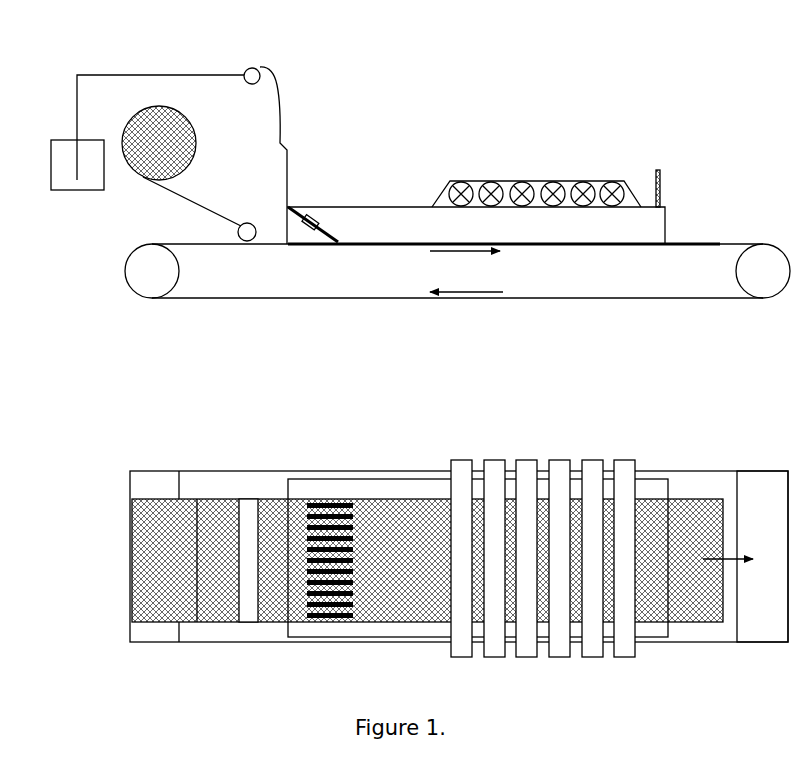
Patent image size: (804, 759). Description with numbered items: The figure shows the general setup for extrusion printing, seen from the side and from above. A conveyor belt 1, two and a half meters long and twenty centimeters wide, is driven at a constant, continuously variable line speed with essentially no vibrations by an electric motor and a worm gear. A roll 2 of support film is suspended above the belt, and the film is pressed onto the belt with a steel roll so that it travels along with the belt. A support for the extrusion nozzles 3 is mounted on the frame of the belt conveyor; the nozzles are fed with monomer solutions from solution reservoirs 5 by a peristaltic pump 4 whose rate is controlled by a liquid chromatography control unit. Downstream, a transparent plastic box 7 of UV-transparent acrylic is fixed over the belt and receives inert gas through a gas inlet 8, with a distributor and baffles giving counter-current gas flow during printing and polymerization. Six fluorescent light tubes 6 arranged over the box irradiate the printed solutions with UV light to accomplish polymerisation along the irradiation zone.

The conveyor belt 1 is at (515, 298).
The roll of support film 2 is at (197, 132).
The support for the extrusion nozzles 3 is at (318, 228).
The peristaltic pump 4 is at (249, 68).
The solution reservoirs 5 is at (51, 162).
The fluorescent light tubes 6 is at (560, 458).
The transparent plastic box 7 is at (650, 485).
The gas inlet 8 is at (661, 178).